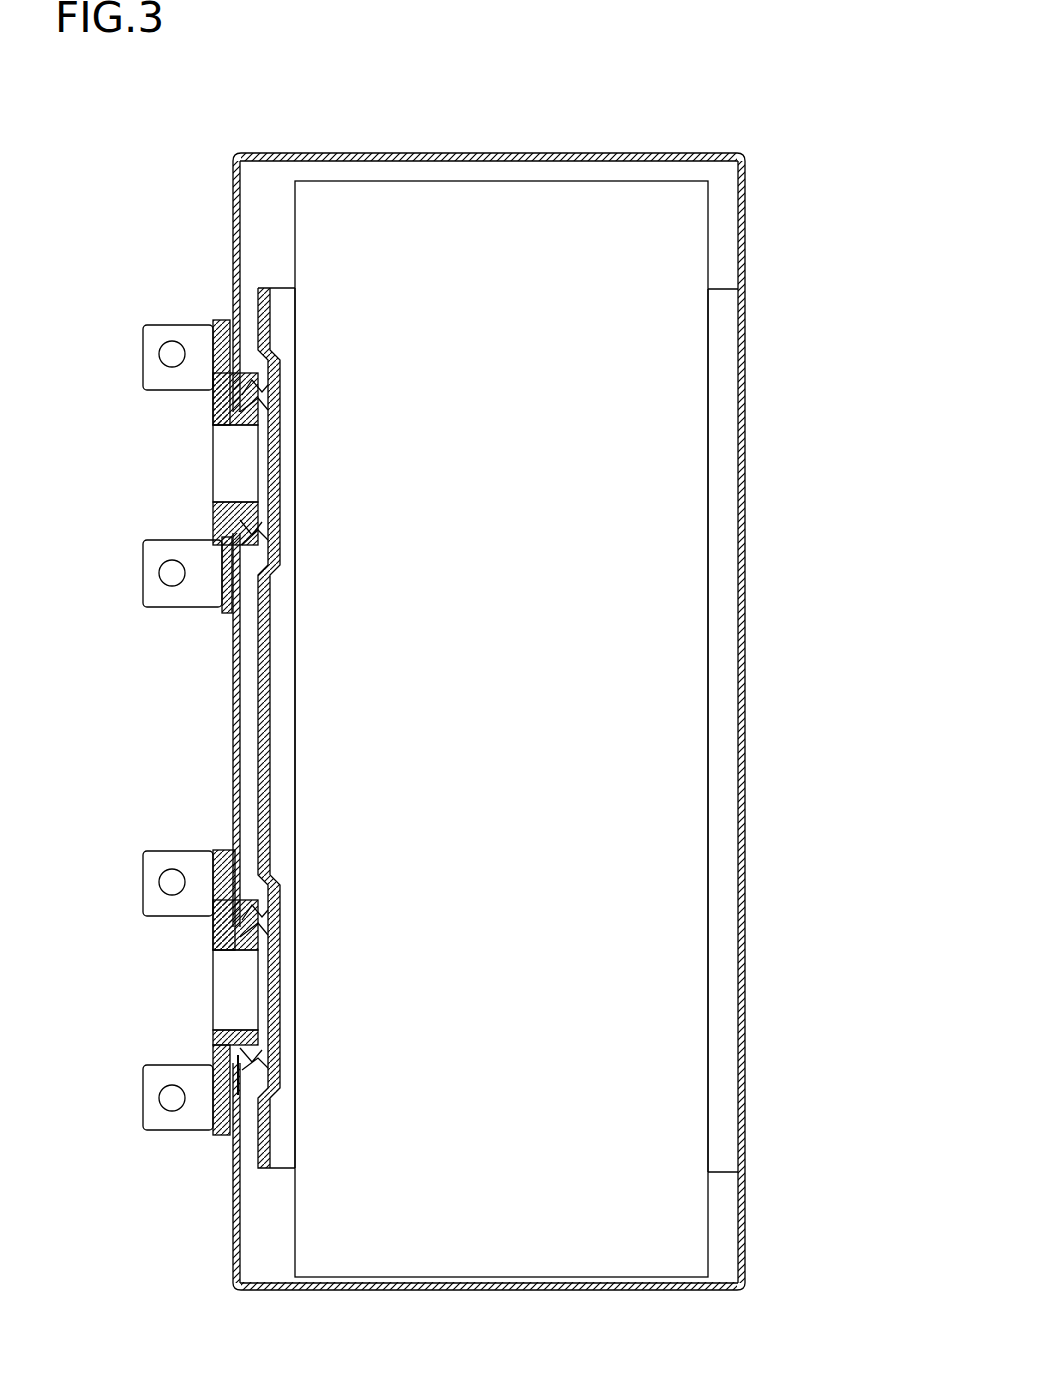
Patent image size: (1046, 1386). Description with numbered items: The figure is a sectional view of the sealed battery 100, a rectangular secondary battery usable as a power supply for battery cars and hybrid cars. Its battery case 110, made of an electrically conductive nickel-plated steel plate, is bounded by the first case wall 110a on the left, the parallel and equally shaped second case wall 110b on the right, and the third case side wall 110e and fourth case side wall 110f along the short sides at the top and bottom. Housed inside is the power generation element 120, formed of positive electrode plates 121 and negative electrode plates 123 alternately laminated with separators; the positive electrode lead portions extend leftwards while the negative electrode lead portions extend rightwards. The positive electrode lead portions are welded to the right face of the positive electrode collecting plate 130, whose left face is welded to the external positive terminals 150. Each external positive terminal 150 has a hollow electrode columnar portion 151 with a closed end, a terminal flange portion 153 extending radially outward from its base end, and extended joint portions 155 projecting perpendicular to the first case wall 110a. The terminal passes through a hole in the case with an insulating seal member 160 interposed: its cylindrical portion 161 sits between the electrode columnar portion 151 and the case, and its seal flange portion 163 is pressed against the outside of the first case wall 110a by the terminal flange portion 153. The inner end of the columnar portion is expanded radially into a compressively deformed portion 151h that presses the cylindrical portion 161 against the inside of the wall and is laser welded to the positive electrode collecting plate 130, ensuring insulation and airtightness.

The sealed battery 100 is at (607, 109).
The battery case 110 is at (690, 153).
The first case wall 110a is at (233, 246).
The second case wall 110b is at (745, 800).
The third case side wall 110e is at (319, 153).
The fourth case side wall 110f is at (527, 1290).
The power generation element 120 is at (653, 1031).
The positive electrode plate 121 is at (283, 748).
The negative electrode plate 123 is at (727, 418).
The positive electrode collecting plate 130 is at (262, 672).
The external positive terminal 150 is at (160, 325).
The electrode columnar portion 151 is at (228, 962).
The compressively deformed portion 151h is at (240, 1108).
The terminal flange portion 153 is at (230, 905).
The extended joint portion 155 is at (150, 882).
The seal member 160 is at (64, 393).
The cylindrical portion 161 is at (218, 448).
The seal flange portion 163 is at (218, 383).